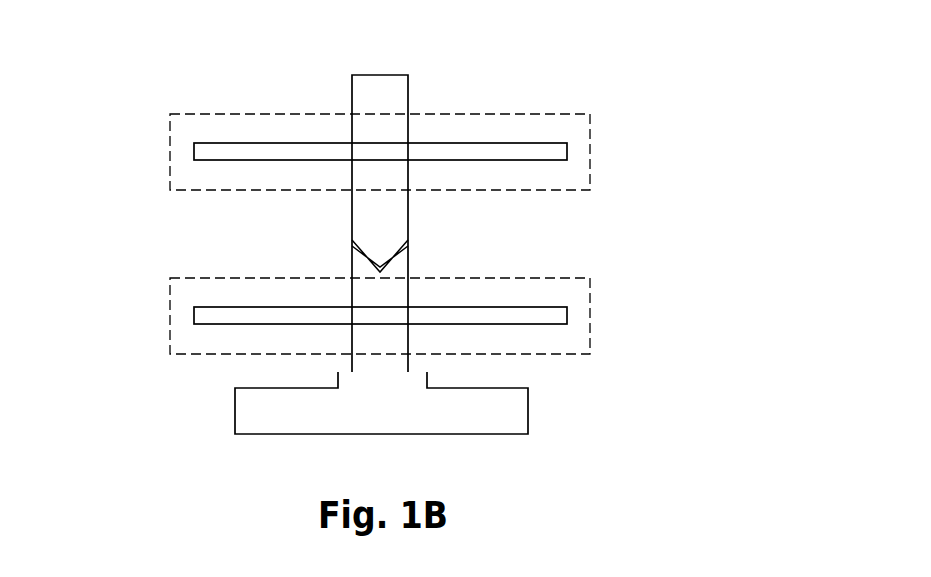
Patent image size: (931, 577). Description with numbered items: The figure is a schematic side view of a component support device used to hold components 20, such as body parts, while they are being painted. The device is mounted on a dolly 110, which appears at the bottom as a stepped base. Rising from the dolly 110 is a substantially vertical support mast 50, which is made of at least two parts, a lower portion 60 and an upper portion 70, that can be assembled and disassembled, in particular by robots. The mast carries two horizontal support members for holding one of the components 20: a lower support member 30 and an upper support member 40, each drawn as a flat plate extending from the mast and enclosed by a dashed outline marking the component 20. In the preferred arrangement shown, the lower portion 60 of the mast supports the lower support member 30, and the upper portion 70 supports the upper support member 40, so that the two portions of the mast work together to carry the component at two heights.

The component 20 is at (548, 110).
The lower support member 30 is at (572, 311).
The upper support member 40 is at (572, 149).
The support mast 50 is at (55, 203).
The lower portion 60 is at (350, 262).
The upper portion 70 is at (356, 177).
The dolly 110 is at (530, 408).